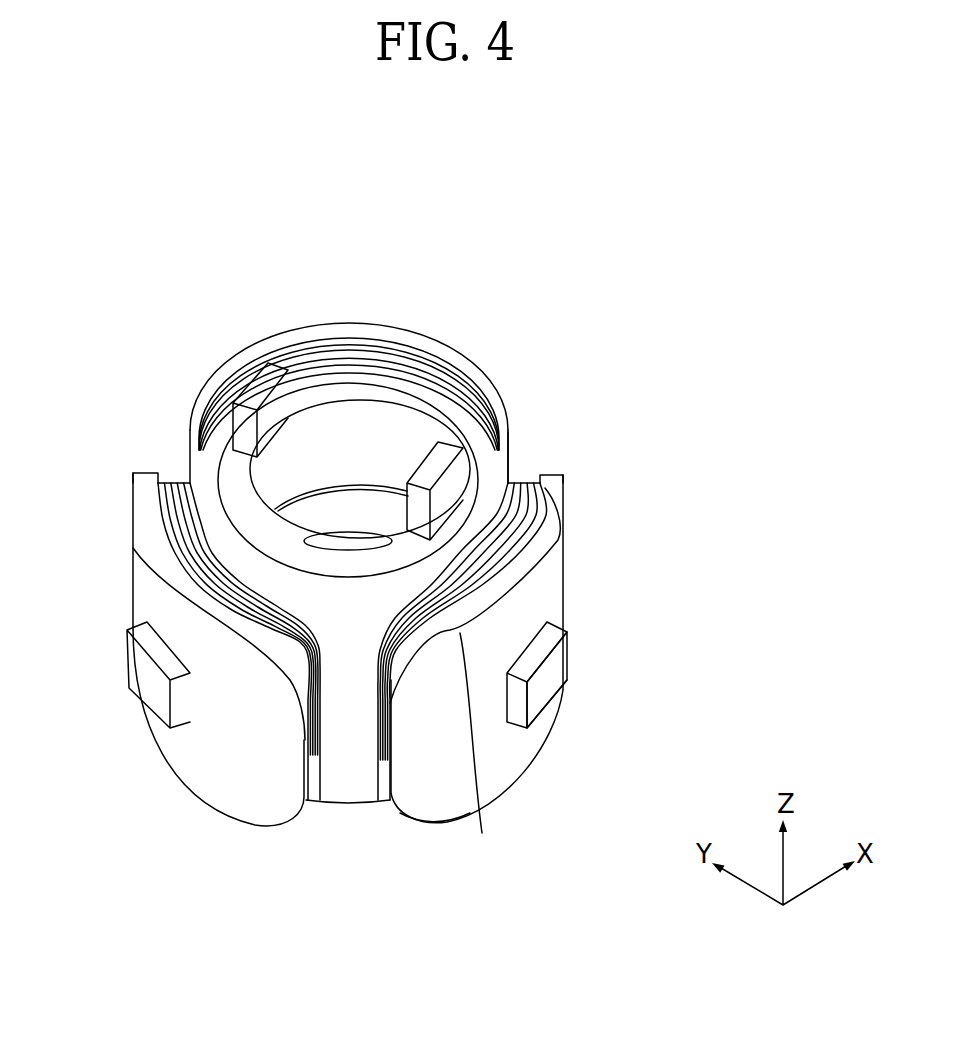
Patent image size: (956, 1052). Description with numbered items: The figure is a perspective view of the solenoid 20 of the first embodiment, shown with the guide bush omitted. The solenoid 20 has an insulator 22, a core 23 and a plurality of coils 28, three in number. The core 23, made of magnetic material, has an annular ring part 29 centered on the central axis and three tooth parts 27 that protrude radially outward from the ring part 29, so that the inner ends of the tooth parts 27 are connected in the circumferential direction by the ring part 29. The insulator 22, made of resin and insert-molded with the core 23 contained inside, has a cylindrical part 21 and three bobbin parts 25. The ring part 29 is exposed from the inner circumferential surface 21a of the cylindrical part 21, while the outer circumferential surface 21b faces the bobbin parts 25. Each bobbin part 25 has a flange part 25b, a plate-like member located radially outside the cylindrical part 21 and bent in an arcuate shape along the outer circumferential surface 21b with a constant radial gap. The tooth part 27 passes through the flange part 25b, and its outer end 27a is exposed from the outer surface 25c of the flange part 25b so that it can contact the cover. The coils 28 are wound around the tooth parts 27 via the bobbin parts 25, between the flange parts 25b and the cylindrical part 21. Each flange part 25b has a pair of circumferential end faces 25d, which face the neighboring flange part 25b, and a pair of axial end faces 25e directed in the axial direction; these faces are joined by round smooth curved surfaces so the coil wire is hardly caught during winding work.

The solenoid 20 is at (537, 281).
The cylindrical part 21 is at (437, 417).
The inner circumferential surface 21a is at (418, 452).
The outer circumferential surface 21b is at (504, 468).
The insulator 22 is at (426, 374).
The core 23 is at (381, 465).
The bobbin part 25 is at (230, 337).
The flange part 25b is at (557, 573).
The outer surface 25c is at (497, 757).
The circumferential end face 25d is at (388, 750).
The axial end face 25e is at (437, 827).
The tooth part 27 is at (557, 633).
The outer end 27a is at (560, 665).
The coil 28 is at (297, 352).
The ring part 29 is at (351, 508).